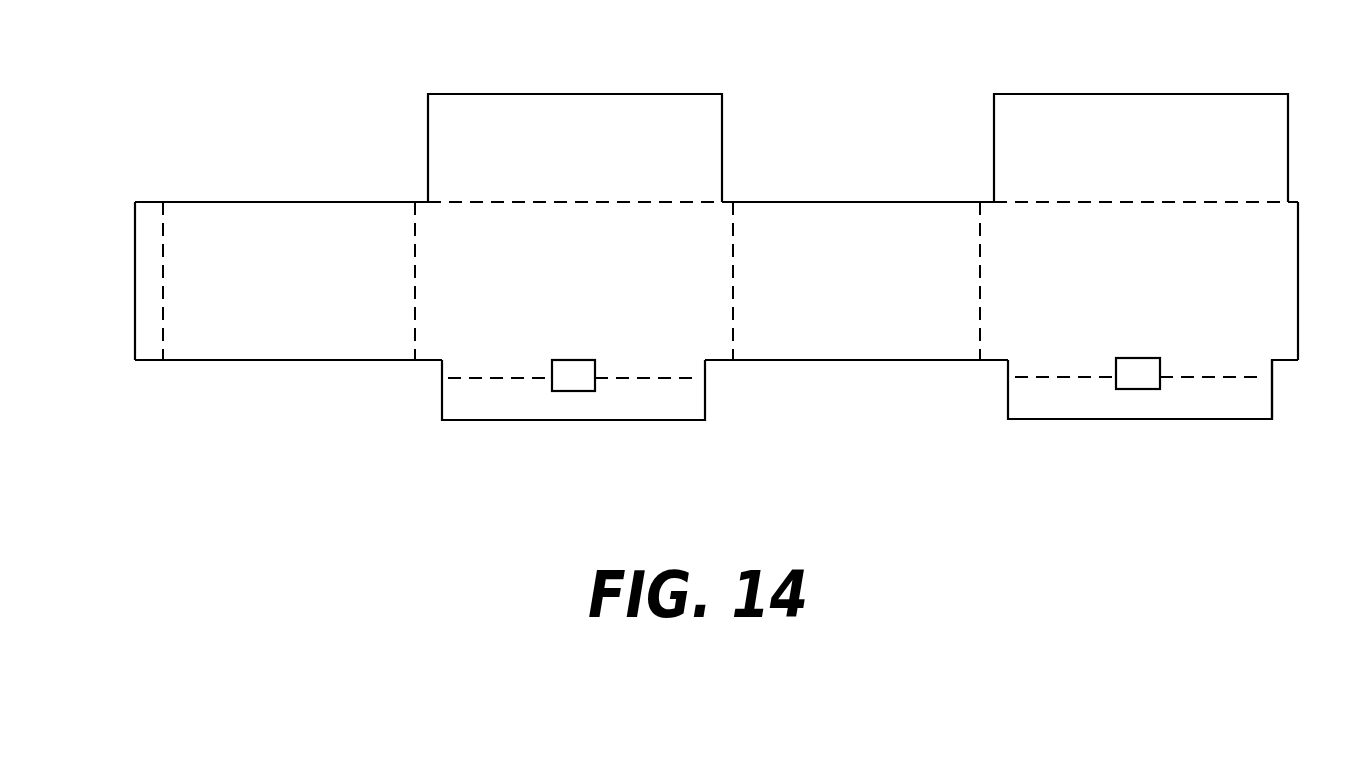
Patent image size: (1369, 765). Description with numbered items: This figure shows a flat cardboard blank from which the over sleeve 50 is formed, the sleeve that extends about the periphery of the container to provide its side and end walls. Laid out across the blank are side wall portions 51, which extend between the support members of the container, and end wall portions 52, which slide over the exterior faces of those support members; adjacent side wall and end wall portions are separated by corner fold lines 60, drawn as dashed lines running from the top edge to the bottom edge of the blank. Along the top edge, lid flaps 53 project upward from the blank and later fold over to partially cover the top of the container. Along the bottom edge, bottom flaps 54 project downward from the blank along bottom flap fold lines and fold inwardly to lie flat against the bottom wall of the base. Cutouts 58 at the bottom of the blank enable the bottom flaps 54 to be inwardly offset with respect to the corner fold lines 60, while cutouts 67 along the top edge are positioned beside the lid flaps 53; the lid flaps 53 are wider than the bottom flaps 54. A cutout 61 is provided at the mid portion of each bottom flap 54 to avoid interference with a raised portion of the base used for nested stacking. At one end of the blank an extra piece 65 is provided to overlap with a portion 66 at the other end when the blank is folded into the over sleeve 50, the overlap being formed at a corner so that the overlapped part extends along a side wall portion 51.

The over sleeve 50 is at (360, 382).
The side wall portion 51 is at (691, 251).
The end wall portion 52 is at (912, 330).
The lid flap 53 is at (600, 113).
The bottom flap 54 is at (642, 402).
The cutout 58 is at (1283, 366).
The corner fold line 60 is at (163, 275).
The cutout 61 is at (578, 360).
The extra piece 65 is at (150, 320).
The portion 66 is at (1296, 260).
The cutout 67 is at (723, 200).